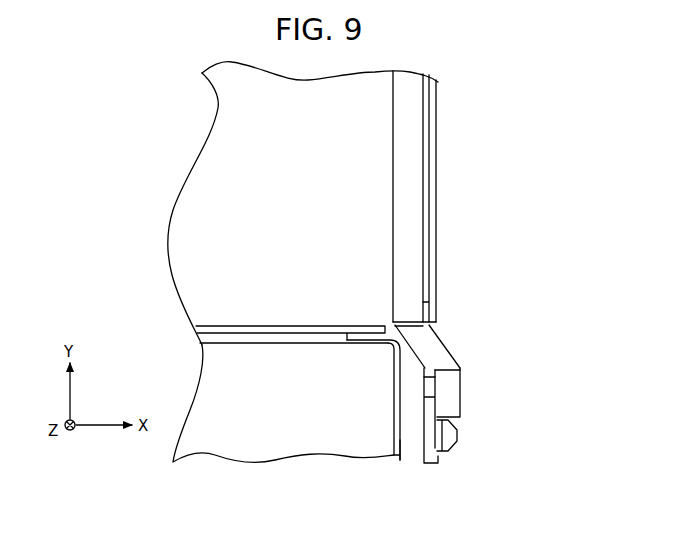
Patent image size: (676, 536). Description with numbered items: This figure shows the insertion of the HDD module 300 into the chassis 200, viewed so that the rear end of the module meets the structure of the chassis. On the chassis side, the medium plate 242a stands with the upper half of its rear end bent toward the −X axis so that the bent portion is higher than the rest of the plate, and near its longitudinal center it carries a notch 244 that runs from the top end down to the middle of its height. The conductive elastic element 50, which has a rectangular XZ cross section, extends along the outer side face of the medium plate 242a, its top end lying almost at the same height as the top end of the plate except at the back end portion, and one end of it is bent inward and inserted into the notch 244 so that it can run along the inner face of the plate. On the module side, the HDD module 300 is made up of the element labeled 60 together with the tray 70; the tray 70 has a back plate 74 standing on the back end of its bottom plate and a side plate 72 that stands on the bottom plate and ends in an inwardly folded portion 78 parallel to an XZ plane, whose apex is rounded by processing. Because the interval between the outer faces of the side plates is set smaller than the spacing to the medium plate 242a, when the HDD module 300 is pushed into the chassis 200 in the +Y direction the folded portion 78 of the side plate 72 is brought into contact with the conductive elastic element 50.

The chassis 200 is at (453, 92).
The medium plate 242a is at (428, 142).
The conductive elastic element 50 is at (407, 207).
The folded portion 78 is at (393, 322).
The notch 244 is at (435, 371).
The back plate 74 is at (233, 328).
The substrate 60 is at (288, 437).
The tray 70 is at (391, 460).
The side plate 72 is at (399, 460).
The HDD module 300 is at (347, 501).